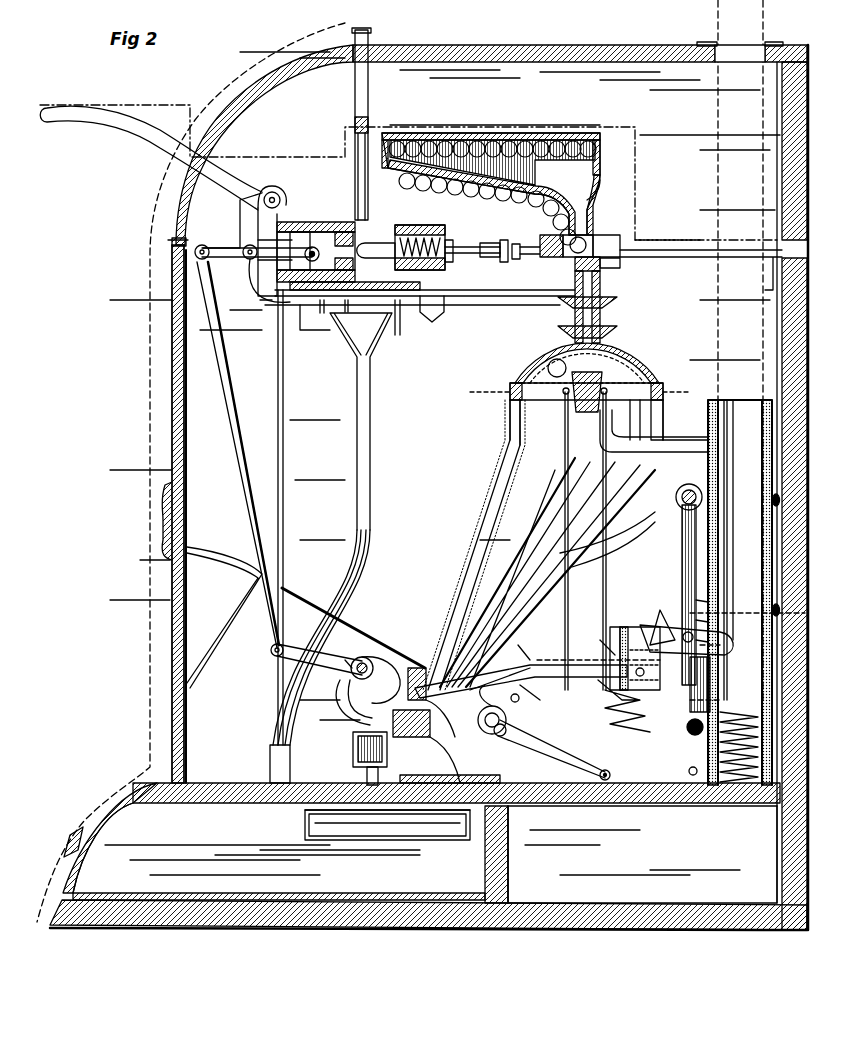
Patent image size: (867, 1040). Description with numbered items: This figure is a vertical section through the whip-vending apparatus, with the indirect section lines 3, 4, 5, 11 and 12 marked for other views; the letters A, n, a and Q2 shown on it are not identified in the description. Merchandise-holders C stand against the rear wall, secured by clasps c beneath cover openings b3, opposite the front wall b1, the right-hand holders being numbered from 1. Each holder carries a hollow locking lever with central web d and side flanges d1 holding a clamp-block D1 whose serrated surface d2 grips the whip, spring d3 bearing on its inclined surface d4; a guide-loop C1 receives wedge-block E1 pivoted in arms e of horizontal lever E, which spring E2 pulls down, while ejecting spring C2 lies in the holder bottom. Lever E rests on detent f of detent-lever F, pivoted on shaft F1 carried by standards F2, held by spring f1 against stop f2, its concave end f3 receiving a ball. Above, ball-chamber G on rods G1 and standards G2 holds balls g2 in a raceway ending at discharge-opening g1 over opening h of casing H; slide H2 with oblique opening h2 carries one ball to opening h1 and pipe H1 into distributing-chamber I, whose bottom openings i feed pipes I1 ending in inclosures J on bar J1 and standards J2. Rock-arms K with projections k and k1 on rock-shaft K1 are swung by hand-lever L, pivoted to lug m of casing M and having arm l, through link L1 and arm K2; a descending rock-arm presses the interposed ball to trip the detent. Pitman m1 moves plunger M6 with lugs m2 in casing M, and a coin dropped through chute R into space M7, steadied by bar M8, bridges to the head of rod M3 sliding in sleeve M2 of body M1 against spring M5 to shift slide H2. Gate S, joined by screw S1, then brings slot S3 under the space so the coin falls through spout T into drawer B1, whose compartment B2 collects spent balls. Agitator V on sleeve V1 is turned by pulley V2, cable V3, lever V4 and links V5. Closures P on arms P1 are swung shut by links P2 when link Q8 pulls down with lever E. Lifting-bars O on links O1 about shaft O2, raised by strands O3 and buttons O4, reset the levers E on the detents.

The section line 3 3 is at (192, 477).
The section line 4 4 is at (39, 96).
The openings in cover b3 is at (790, 45).
The hand-lever L is at (168, 143).
The arm of hand-lever l is at (245, 220).
The link L1 is at (250, 332).
The coin-chute R is at (355, 72).
The rotary agitator V is at (369, 100).
The ball-holding chamber G is at (560, 132).
The weights or balls g2 is at (512, 133).
The discharge-opening g1 is at (593, 203).
The perforated slide or valve H2 is at (602, 236).
The oblique through-opening h2 is at (560, 256).
The opening in casing h is at (548, 241).
The feed rod collar n is at (500, 247).
The vertical pipe or passage H1 is at (701, 270).
The lower opening of casing h1 is at (603, 264).
The casing H is at (565, 276).
The frame rods G1 is at (664, 251).
The lug m is at (283, 203).
The pitman m1 is at (262, 288).
The cylindric casing M is at (335, 207).
The plunger M6 is at (342, 218).
The coin-receiving space M7 is at (365, 241).
The vertical bar M8 is at (362, 269).
The plunger lugs m2 is at (362, 232).
The cylindric body M1 is at (422, 228).
The sleeve or tube M2 is at (440, 270).
The sliding rod M3 is at (518, 257).
The spiral spring M5 is at (440, 323).
The sliding gate S is at (360, 291).
The screw S1 is at (330, 341).
The coin-releasing slot S3 is at (361, 421).
The spout or chute T is at (371, 368).
The links V5 is at (318, 315).
The oscillatory lever V4 is at (397, 336).
The oblique standards G2 is at (328, 330).
The front wall b1 is at (172, 342).
The casing A is at (172, 409).
The buttons O4 is at (163, 517).
The cable V3 is at (530, 308).
The pulley V2 is at (612, 304).
The sleeve V1 is at (612, 333).
The distributing-chamber I is at (636, 356).
The section line 11 11 is at (584, 391).
The discharge-openings i is at (582, 388).
The closure plate P is at (512, 402).
The closure arm P1 is at (562, 400).
The post guide a is at (663, 420).
The holder designation 1 is at (680, 445).
The vertical links P2 is at (650, 510).
The pipes or passages I1 is at (558, 548).
The merchandise-holders C is at (740, 592).
The metal clasps c is at (775, 553).
The column spring Q2 is at (739, 744).
The arms of lever E e is at (755, 698).
The central web d is at (682, 556).
The side flanges d1 is at (682, 582).
The clamp-block D1 is at (686, 639).
The serrated surface d2 is at (702, 626).
The rear inclined surface d4 is at (700, 602).
The spring d3 is at (658, 625).
The wedge-block E1 is at (624, 625).
The guide-loop C1 is at (620, 637).
The link Q8 is at (615, 700).
The section line 12 12 is at (672, 653).
The spiral contractile spring E2 is at (689, 772).
The detent-lever F is at (522, 674).
The detent f is at (512, 656).
The horizontal lever E is at (579, 646).
The stop f2 is at (520, 669).
The horizontal shaft F1 is at (522, 690).
The section line 5 5 is at (520, 702).
The spring f1 is at (484, 720).
The stationary shaft O2 is at (508, 733).
The links O1 is at (562, 753).
The lifting-bars O is at (607, 771).
The flexible strands O3 is at (302, 592).
The arm K2 is at (342, 662).
The rock-arm K is at (375, 680).
The rock-shaft K1 is at (355, 674).
The projection k1 is at (366, 702).
The projection k is at (360, 702).
The inclosures J is at (416, 667).
The concave end surface f3 is at (411, 722).
The transverse bar J1 is at (458, 728).
The vertical standards J2 is at (470, 753).
The drawer B1 is at (142, 848).
The compartment B2 is at (387, 823).
The standards or stanchions F2 is at (531, 854).
The ejecting spring C2 is at (742, 854).